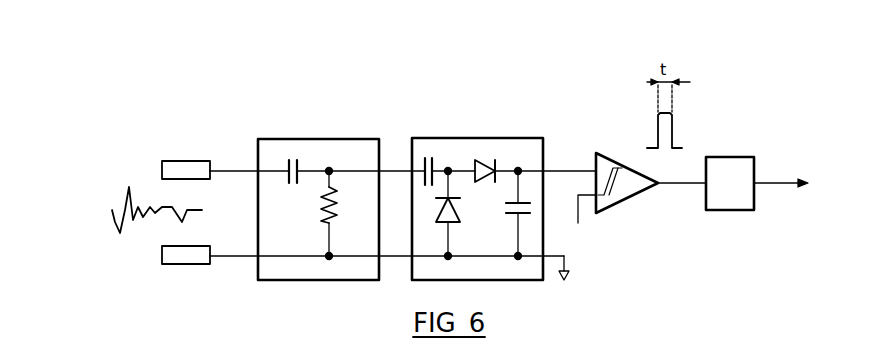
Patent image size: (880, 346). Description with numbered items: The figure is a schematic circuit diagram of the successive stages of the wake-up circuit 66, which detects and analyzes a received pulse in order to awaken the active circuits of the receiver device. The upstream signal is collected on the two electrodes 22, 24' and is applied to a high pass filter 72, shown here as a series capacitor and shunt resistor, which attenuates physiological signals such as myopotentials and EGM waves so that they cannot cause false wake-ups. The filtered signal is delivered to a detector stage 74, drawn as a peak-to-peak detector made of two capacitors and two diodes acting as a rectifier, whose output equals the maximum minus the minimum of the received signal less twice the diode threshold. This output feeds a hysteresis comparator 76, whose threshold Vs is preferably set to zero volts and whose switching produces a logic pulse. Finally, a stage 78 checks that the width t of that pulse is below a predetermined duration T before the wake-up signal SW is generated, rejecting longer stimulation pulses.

The electrode 22 is at (183, 160).
The electrode 24' is at (210, 285).
The wake-up circuit 66 is at (363, 91).
The high pass filter 72 is at (342, 138).
The detector stage 74 is at (489, 138).
The hysteresis comparator 76 is at (615, 160).
The pulse width checking stage 78 is at (733, 157).